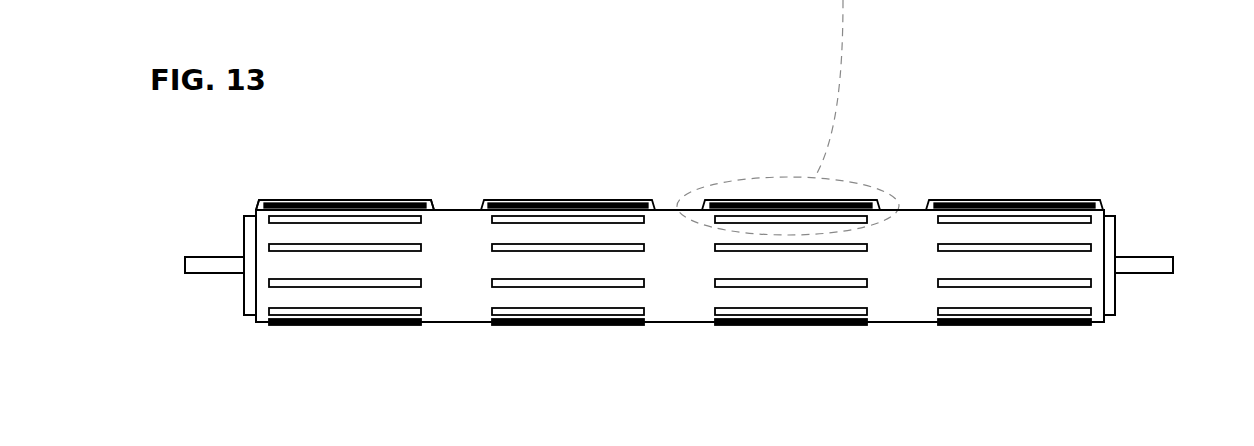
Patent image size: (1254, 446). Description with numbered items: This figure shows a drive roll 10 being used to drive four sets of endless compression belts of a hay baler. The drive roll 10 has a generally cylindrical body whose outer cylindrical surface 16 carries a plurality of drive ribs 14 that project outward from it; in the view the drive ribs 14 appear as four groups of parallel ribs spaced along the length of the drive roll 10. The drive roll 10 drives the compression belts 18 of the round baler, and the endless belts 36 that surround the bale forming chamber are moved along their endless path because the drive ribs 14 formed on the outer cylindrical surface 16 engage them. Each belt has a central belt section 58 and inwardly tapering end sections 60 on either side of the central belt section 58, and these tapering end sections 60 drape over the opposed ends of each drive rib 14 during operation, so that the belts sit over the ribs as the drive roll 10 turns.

The drive roll 10 is at (240, 241).
The drive ribs 14 is at (338, 310).
The outer cylindrical surface 16 is at (459, 298).
The compression belts 18 is at (356, 204).
The endless belts 36 is at (530, 199).
The central belt section 58 is at (322, 201).
The inwardly tapering end sections 60 is at (257, 200).